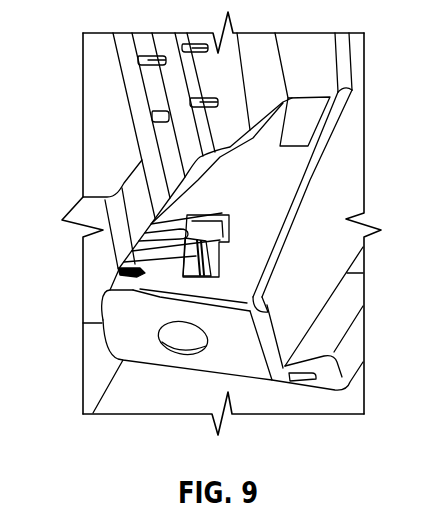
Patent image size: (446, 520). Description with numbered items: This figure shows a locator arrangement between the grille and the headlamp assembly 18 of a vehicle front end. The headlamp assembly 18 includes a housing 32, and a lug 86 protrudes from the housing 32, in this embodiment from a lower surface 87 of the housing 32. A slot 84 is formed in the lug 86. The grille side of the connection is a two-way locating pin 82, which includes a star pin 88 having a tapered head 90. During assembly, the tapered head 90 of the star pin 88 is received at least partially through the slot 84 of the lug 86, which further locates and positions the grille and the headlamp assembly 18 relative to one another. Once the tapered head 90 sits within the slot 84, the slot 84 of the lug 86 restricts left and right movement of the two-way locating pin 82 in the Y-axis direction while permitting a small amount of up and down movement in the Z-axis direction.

The headlamp assembly 18 is at (94, 159).
The housing 32 is at (93, 262).
The two-way locating pin 82 is at (268, 167).
The slot 84 is at (212, 258).
The lug 86 is at (230, 240).
The lower surface 87 is at (100, 320).
The star pin 88 is at (216, 215).
The tapered head 90 is at (97, 306).